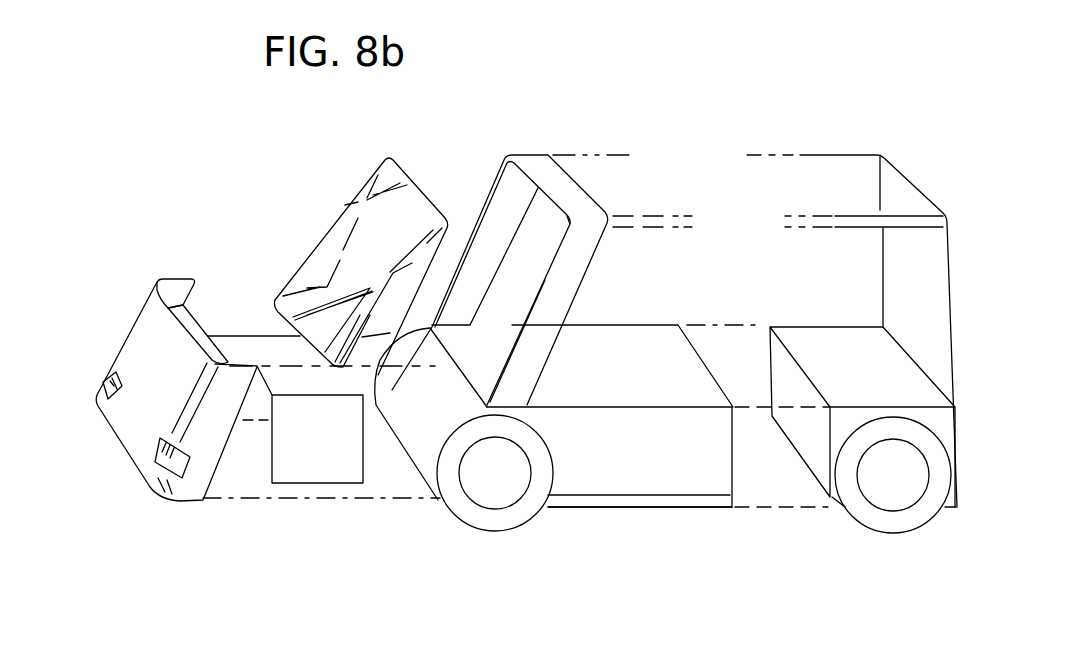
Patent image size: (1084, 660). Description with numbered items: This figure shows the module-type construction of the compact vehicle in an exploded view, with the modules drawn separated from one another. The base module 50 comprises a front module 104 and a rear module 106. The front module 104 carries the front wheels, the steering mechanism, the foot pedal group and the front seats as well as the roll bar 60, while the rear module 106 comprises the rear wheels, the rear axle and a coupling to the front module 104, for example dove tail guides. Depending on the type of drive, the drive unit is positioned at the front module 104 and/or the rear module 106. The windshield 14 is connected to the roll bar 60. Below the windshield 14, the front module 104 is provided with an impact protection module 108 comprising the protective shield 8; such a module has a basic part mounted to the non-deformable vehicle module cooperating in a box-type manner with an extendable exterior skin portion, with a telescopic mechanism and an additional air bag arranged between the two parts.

The protective shield 8 is at (135, 349).
The impact protection module 108 is at (173, 266).
The windshield 14 is at (329, 220).
The roll bar 60 is at (557, 174).
The base module 50 is at (652, 461).
The rear module 106 is at (812, 343).
The front module 104 is at (647, 498).